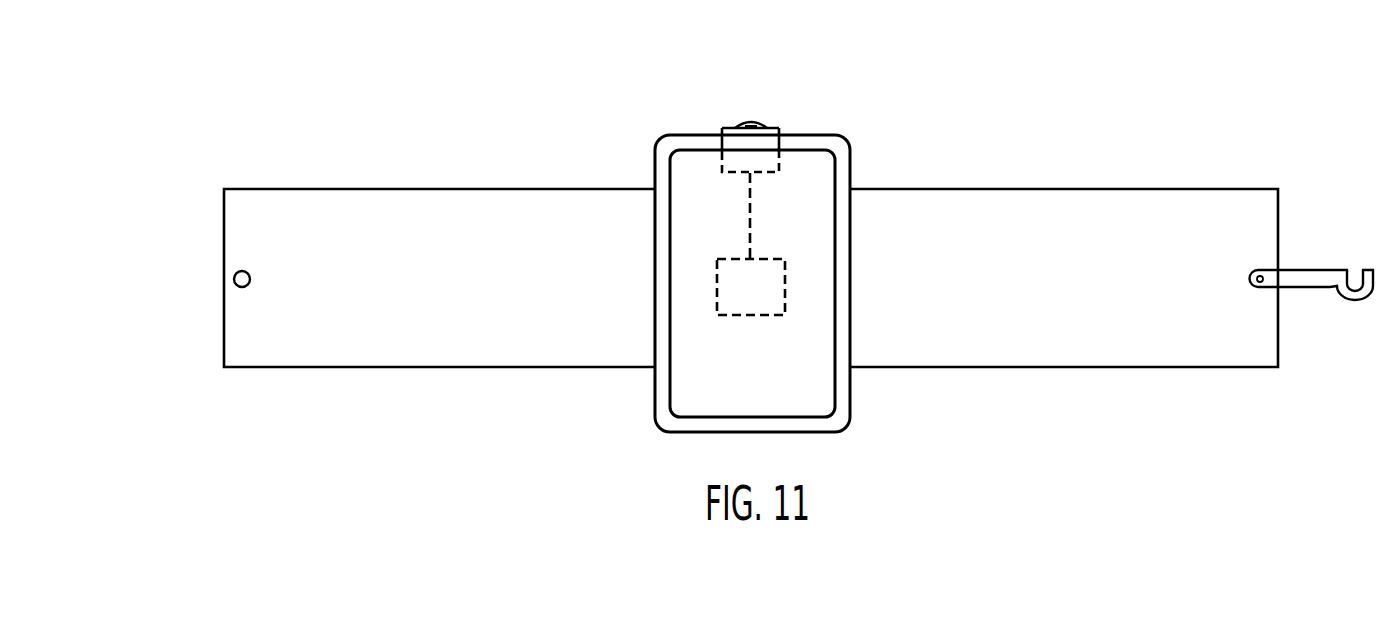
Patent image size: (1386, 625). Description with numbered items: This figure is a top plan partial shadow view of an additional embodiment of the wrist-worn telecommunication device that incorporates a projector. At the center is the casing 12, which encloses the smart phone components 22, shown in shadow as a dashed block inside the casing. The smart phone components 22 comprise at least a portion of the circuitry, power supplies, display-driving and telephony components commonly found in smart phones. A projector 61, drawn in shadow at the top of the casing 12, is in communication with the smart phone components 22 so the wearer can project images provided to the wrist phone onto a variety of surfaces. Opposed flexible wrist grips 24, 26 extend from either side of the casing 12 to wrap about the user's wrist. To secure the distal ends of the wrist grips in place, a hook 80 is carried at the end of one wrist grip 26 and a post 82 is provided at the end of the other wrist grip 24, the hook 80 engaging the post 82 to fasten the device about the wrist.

The casing 12 is at (668, 133).
The smart phone components 22 is at (785, 276).
The flexible wrist grip 24 is at (442, 222).
The flexible wrist grip 26 is at (1066, 222).
The projector 61 is at (770, 127).
The hook 80 is at (1302, 268).
The post 82 is at (233, 277).